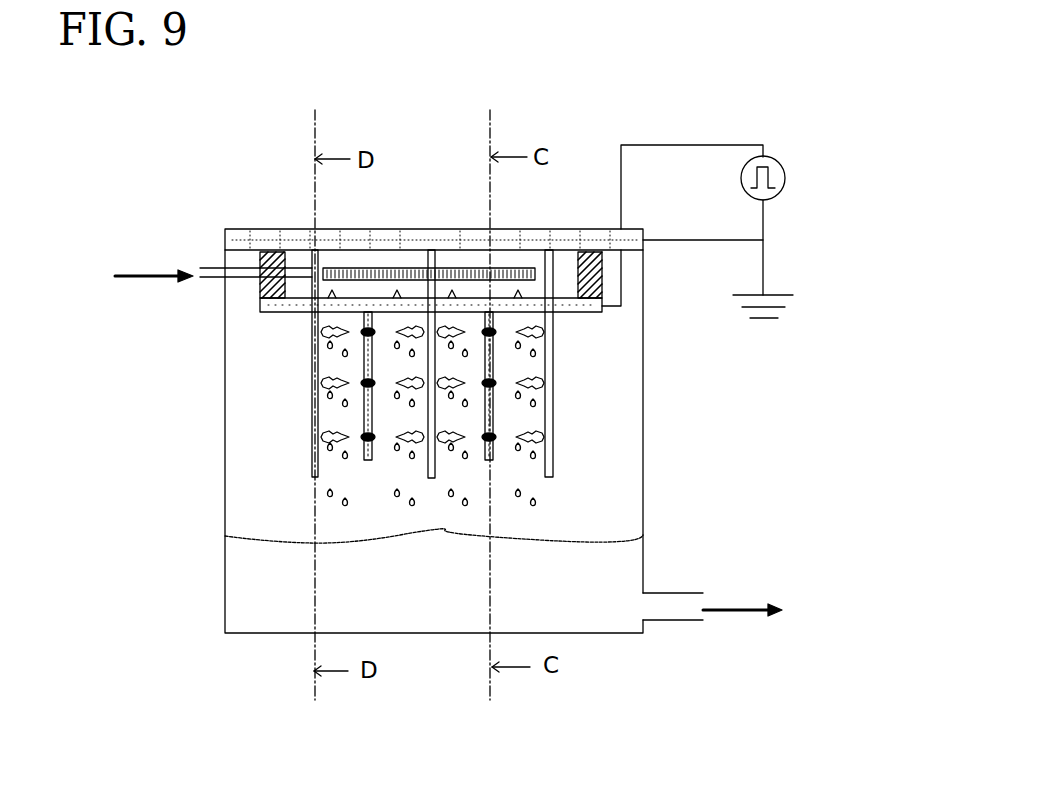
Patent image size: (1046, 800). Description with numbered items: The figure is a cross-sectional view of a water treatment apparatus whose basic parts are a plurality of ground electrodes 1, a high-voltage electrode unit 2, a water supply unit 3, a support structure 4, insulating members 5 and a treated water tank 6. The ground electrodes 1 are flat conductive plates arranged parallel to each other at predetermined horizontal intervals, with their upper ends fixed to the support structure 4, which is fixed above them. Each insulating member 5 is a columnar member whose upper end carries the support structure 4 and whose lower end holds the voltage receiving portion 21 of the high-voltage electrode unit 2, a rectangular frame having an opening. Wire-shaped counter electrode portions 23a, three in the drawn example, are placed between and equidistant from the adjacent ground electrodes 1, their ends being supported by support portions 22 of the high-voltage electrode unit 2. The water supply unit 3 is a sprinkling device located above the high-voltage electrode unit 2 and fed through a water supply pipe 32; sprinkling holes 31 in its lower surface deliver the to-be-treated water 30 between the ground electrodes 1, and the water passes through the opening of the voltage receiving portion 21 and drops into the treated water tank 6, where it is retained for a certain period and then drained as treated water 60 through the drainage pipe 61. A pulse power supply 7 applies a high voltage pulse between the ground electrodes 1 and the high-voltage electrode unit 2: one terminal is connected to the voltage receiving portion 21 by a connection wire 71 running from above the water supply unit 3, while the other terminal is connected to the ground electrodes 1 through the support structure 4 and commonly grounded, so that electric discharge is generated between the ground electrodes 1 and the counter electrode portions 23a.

The ground electrode 1 is at (553, 423).
The high-voltage electrode unit 2 is at (260, 312).
The water supply unit 3 is at (355, 270).
The support structure 4 is at (415, 229).
The insulating member 5 is at (260, 290).
The treated water tank 6 is at (225, 590).
The pulse power supply 7 is at (790, 170).
The voltage receiving portion 21 is at (578, 314).
The support portion 22 is at (364, 356).
The counter electrode portion 23a is at (363, 440).
The to-be-treated water 30 is at (130, 272).
The sprinkling hole 31 is at (372, 282).
The water supply pipe 32 is at (200, 268).
The treated water 60 is at (727, 607).
The drainage pipe 61 is at (673, 620).
The connection wire 71 is at (668, 143).